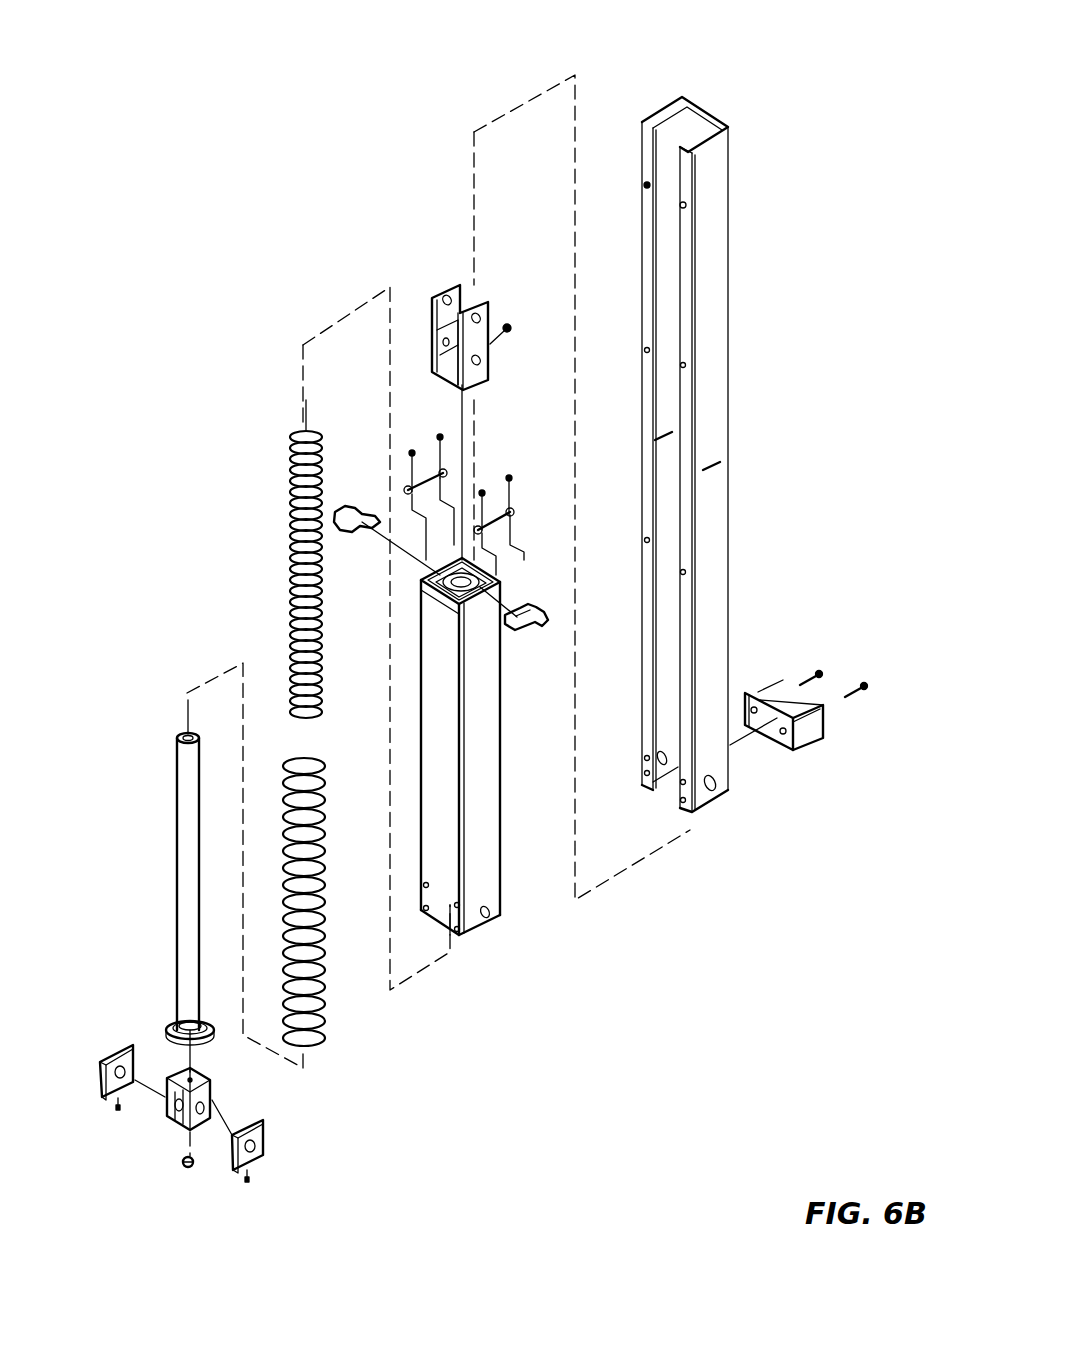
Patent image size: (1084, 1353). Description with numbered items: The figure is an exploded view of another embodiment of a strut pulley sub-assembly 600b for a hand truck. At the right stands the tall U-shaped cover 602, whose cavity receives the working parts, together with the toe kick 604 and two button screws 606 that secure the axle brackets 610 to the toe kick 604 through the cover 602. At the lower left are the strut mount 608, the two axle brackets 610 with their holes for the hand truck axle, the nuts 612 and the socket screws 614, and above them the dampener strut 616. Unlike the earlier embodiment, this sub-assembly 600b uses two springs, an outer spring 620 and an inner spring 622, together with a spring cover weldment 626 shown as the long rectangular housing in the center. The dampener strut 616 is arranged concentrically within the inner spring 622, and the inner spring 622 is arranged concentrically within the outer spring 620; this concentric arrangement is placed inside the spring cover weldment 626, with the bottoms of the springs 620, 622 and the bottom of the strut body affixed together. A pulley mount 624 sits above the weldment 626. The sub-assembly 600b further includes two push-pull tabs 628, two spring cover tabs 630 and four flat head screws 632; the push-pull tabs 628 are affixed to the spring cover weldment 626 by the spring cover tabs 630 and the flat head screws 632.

The strut pulley sub-assembly 600b is at (213, 190).
The U-shaped cover 602 is at (740, 578).
The toe kick 604 is at (815, 747).
The button screws 606 is at (856, 686).
The strut mount 608 is at (164, 1120).
The axle brackets 610 is at (117, 1043).
The nuts 612 is at (180, 1166).
The socket screws 614 is at (258, 1170).
The dampener strut 616 is at (177, 946).
The outer spring 620 is at (326, 922).
The inner spring 622 is at (289, 570).
The pulley mount 624 is at (448, 290).
The spring cover weldment 626 is at (490, 935).
The push-pull tabs 628 is at (520, 636).
The spring cover tabs 630 is at (519, 516).
The flat head screws 632 is at (438, 433).